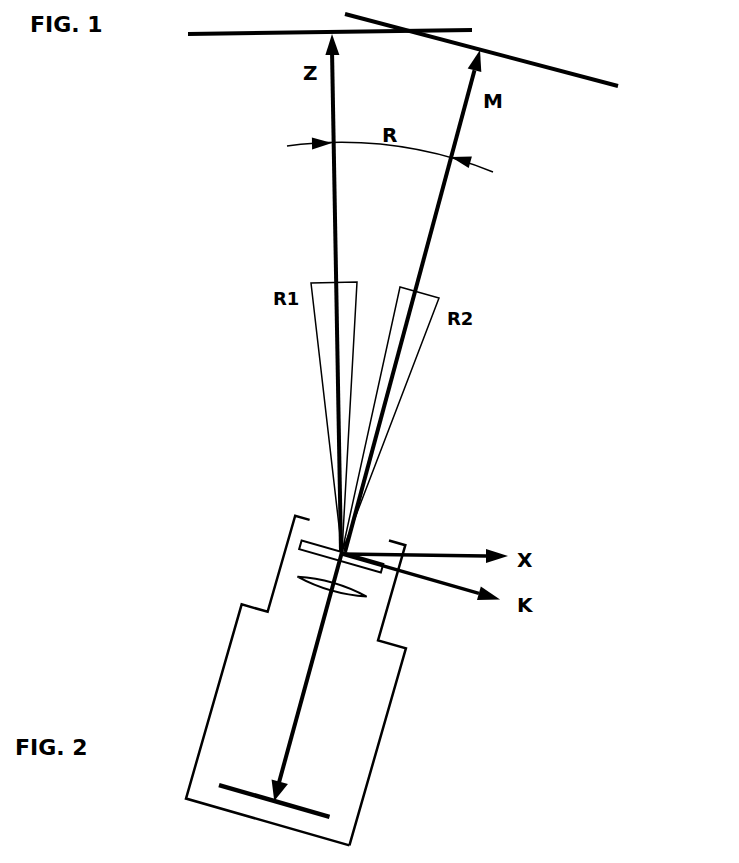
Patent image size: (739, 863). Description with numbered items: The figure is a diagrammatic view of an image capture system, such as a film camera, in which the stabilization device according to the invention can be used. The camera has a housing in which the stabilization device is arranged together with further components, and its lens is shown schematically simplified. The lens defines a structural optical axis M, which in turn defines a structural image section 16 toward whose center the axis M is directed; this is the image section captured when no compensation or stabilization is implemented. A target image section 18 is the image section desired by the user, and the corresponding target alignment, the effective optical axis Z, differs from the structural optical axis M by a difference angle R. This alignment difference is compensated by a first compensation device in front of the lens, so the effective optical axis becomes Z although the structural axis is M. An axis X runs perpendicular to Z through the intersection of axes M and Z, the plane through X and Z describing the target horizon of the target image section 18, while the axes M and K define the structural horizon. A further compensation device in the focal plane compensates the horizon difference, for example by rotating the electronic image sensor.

The structural image section 16 is at (585, 85).
The target image section 18 is at (208, 35).